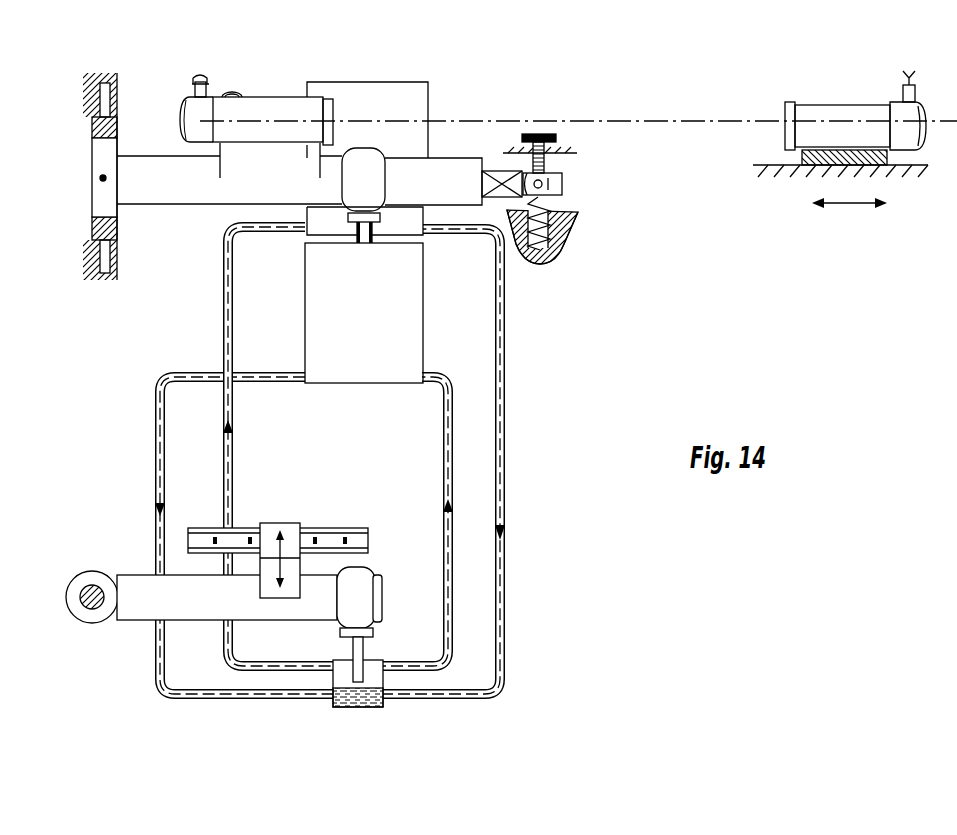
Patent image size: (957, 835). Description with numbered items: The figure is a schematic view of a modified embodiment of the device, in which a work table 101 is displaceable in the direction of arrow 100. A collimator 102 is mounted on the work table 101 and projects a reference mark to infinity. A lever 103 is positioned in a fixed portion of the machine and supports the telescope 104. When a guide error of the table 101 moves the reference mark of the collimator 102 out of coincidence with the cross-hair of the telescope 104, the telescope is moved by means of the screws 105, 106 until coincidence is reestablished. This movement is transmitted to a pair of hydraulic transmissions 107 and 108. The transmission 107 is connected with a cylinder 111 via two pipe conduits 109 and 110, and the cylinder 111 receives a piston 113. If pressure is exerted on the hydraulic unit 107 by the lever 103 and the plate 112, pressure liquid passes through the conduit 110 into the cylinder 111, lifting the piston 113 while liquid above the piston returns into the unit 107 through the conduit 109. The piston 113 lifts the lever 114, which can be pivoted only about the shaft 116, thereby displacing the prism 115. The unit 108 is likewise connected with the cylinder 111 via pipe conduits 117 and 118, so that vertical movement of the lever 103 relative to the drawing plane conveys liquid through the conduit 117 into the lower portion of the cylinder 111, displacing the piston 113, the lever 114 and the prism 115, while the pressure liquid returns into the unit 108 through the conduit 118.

The arrow 100 is at (846, 206).
The work table 101 is at (890, 178).
The collimator 102 is at (805, 104).
The lever 103 is at (161, 190).
The telescope 104 is at (256, 105).
The screw 105 is at (558, 138).
The screw 106 is at (562, 185).
The hydraulic transmission 107 is at (413, 330).
The hydraulic transmission 108 is at (420, 102).
The pipe conduit 109 is at (446, 432).
The pipe conduit 110 is at (164, 484).
The cylinder 111 is at (394, 682).
The plate 112 is at (382, 218).
The piston 113 is at (364, 680).
The lever 114 is at (360, 585).
The prism 115 is at (277, 528).
The shaft 116 is at (86, 607).
The pipe conduit 117 is at (507, 396).
The pipe conduit 118 is at (232, 322).